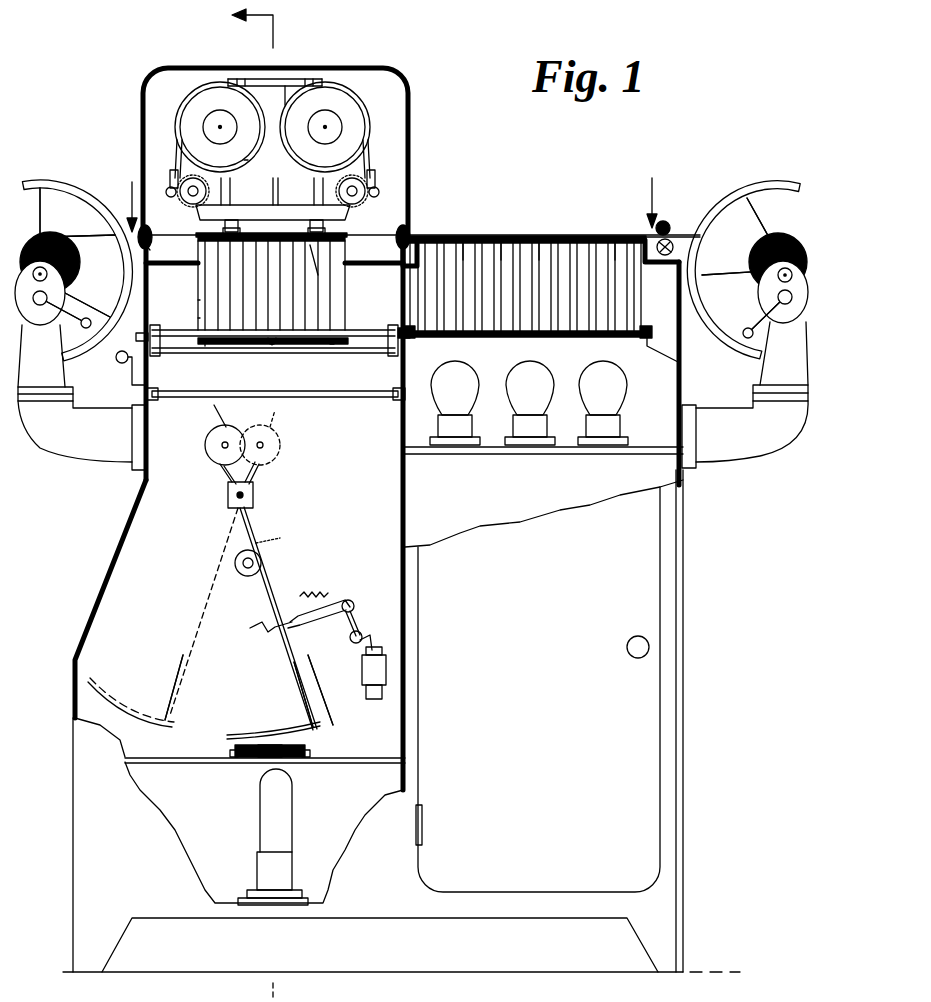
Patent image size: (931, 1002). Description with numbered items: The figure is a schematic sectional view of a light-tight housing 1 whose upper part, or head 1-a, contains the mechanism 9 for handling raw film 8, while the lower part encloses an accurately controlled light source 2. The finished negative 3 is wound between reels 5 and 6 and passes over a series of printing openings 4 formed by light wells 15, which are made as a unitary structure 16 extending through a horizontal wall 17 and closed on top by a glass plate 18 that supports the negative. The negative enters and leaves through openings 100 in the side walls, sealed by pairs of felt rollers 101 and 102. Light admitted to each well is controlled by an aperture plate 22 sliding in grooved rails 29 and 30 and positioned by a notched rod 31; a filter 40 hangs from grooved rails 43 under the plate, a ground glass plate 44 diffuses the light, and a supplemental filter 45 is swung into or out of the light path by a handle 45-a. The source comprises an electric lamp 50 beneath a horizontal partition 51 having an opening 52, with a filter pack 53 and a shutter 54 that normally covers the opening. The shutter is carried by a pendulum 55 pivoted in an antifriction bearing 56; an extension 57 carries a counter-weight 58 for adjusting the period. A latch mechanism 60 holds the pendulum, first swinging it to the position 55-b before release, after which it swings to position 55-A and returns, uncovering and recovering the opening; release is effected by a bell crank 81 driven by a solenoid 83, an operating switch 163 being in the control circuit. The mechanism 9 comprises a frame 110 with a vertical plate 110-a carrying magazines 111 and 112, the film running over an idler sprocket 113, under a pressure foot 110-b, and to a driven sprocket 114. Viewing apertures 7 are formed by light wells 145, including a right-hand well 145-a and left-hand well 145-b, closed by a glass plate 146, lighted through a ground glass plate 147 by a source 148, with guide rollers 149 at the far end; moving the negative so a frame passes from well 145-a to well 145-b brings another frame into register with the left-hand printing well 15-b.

The light-tight housing 1 is at (110, 570).
The head 1-a is at (408, 148).
The light source 2 is at (250, 503).
The negative 3 is at (693, 237).
The printing openings 4 is at (345, 250).
The reel 5 is at (790, 186).
The reel 6 is at (50, 185).
The viewing apertures 7 is at (545, 232).
The raw film 8 is at (186, 208).
The mechanism 9 is at (258, 160).
The light wells 15 is at (310, 300).
The left-hand printing well 15-b is at (198, 318).
The unitary structure 16 is at (198, 300).
The horizontal wall 17 is at (182, 266).
The glass plate 18 is at (320, 247).
The aperture plate 22 is at (360, 328).
The grooved rail 29 is at (410, 338).
The grooved rail 30 is at (136, 338).
The notched rod 31 is at (272, 346).
The filter 40 is at (238, 344).
The grooved rails 43 is at (215, 346).
The ground glass plate 44 is at (332, 346).
The supplemental filter 45 is at (360, 398).
The handle 45-a is at (128, 380).
The electric lamp 50 is at (292, 815).
The horizontal partition 51 is at (358, 766).
The light transmitting opening 52 is at (260, 757).
The filter pack 53 is at (268, 762).
The shutter 54 is at (255, 732).
The pendulum 55 is at (288, 678).
The broken line position 55-A is at (178, 661).
The broken line position 55-b is at (320, 665).
The antifriction bearing structure 56 is at (228, 495).
The extension 57 is at (215, 420).
The counter-weight 58 is at (205, 450).
The latch mechanism 60 is at (292, 592).
The bell crank 81 is at (340, 590).
The solenoid 83 is at (388, 670).
The openings 100 is at (143, 245).
The felt rollers 101 is at (143, 236).
The felt rollers 102 is at (143, 250).
The frame 110 is at (260, 85).
The vertically extending plate 110-a is at (283, 84).
The pressure foot 110-b is at (268, 190).
The film magazine 111 is at (195, 108).
The film magazine 112 is at (350, 108).
The idler sprocket 113 is at (172, 172).
The driven sprocket 114 is at (355, 205).
The viewing light wells 145 is at (560, 230).
The right-hand viewing well 145-a is at (638, 235).
The left-hand viewing well 145-b is at (460, 235).
The glass plate 146 is at (495, 235).
The ground glass plate 147 is at (553, 337).
The source 148 is at (529, 403).
The guide rollers 149 is at (683, 225).
The operating switch 163 is at (272, 553).